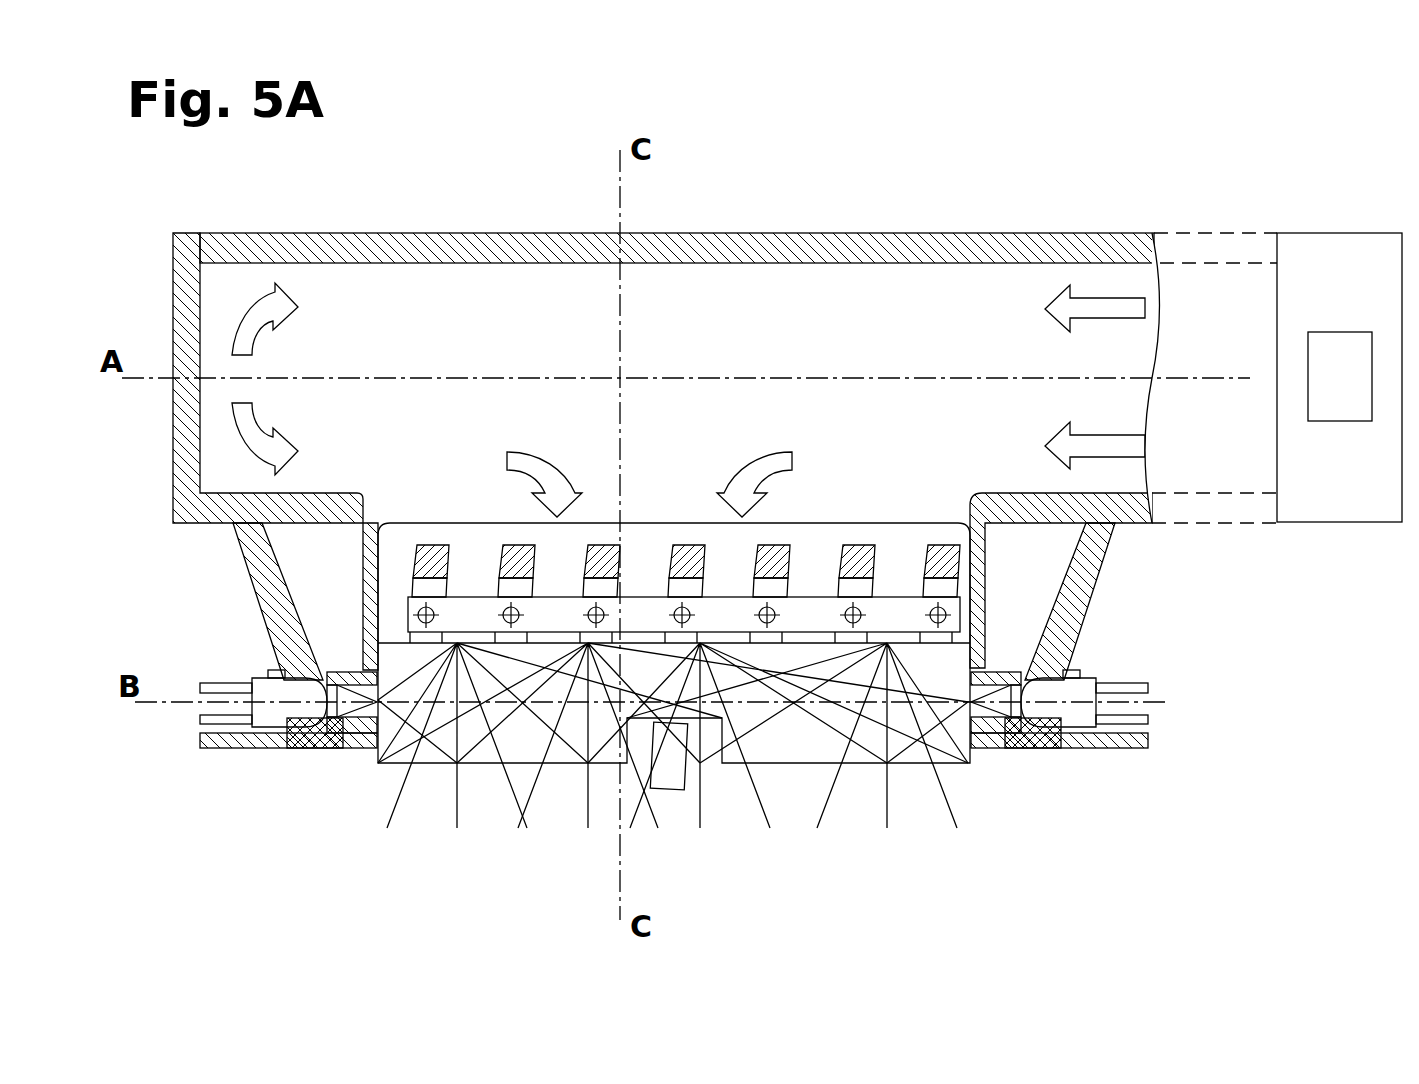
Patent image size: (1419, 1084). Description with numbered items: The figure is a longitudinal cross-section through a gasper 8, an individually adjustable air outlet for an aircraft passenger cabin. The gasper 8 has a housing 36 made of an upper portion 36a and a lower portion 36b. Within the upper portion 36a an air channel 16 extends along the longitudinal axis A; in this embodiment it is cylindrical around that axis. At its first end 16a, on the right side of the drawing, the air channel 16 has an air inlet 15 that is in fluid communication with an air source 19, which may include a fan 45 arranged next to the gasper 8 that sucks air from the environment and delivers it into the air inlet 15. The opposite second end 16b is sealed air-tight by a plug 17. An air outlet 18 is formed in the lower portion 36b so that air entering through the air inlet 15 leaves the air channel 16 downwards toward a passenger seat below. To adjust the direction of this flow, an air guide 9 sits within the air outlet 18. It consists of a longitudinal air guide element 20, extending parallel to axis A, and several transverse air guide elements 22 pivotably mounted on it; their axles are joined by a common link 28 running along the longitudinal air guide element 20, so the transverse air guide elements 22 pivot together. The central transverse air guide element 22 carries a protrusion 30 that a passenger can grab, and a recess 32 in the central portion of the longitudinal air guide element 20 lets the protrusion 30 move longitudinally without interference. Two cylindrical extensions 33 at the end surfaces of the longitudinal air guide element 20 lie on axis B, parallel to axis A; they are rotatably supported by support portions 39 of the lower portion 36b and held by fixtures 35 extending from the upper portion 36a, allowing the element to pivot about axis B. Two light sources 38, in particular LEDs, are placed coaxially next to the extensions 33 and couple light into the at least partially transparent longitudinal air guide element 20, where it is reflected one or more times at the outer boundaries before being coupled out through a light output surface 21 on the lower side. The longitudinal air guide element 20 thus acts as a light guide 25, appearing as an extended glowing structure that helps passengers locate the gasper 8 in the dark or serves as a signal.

The gasper 8 is at (1122, 136).
The air guide 9 is at (487, 810).
The air inlet 15 is at (1170, 273).
The air channel 16 is at (672, 272).
The first end 16a is at (1135, 226).
The second end 16b is at (212, 228).
The plug 17 is at (188, 463).
The air outlet 18 is at (550, 430).
The air source 19 is at (1377, 513).
The longitudinal air guide element 20 is at (785, 764).
The light output surface 21 is at (925, 758).
The transverse air guide elements 22 is at (517, 546).
The light guide 25 is at (560, 810).
The common link 28 is at (820, 610).
The protrusion 30 is at (672, 810).
The recess 32 is at (717, 770).
The cylindrical extensions 33 is at (346, 660).
The fixtures 35 is at (368, 596).
The housing 36 is at (220, 753).
The upper portion 36a is at (795, 224).
The lower portion 36b is at (1113, 567).
The light sources 38 is at (263, 712).
The support portions 39 is at (332, 754).
The fan 45 is at (1335, 350).